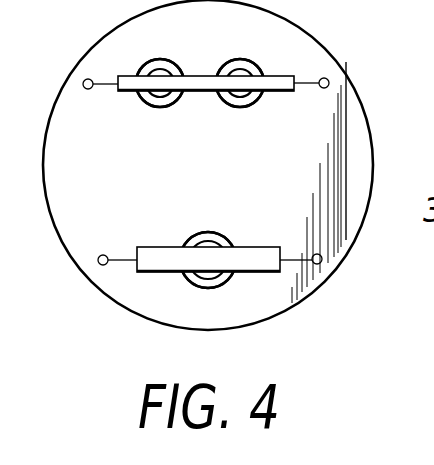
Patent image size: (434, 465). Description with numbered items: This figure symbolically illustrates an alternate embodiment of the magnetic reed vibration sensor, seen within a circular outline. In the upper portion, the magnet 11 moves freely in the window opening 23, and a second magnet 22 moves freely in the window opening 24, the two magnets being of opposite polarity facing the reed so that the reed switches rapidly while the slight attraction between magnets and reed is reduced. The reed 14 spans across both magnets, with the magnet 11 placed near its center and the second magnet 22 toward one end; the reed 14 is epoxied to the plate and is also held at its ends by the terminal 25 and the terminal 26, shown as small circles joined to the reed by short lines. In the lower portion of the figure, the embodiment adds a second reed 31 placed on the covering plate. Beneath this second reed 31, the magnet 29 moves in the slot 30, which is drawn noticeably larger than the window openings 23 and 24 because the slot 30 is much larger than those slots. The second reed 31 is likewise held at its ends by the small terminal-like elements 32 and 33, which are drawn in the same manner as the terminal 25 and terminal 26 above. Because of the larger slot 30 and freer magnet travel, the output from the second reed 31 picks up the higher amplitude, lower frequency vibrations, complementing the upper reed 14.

The magnet 11 is at (166, 72).
The reed 14 is at (198, 80).
The second magnet 22 is at (240, 72).
The window opening 23 is at (163, 107).
The window opening 24 is at (245, 105).
The terminal 25 is at (84, 80).
The terminal 26 is at (330, 78).
The magnet 29 is at (215, 244).
The slot 30 is at (218, 289).
The second reed 31 is at (263, 272).
The pivot pin 32 is at (103, 266).
The pivot pin 33 is at (317, 265).